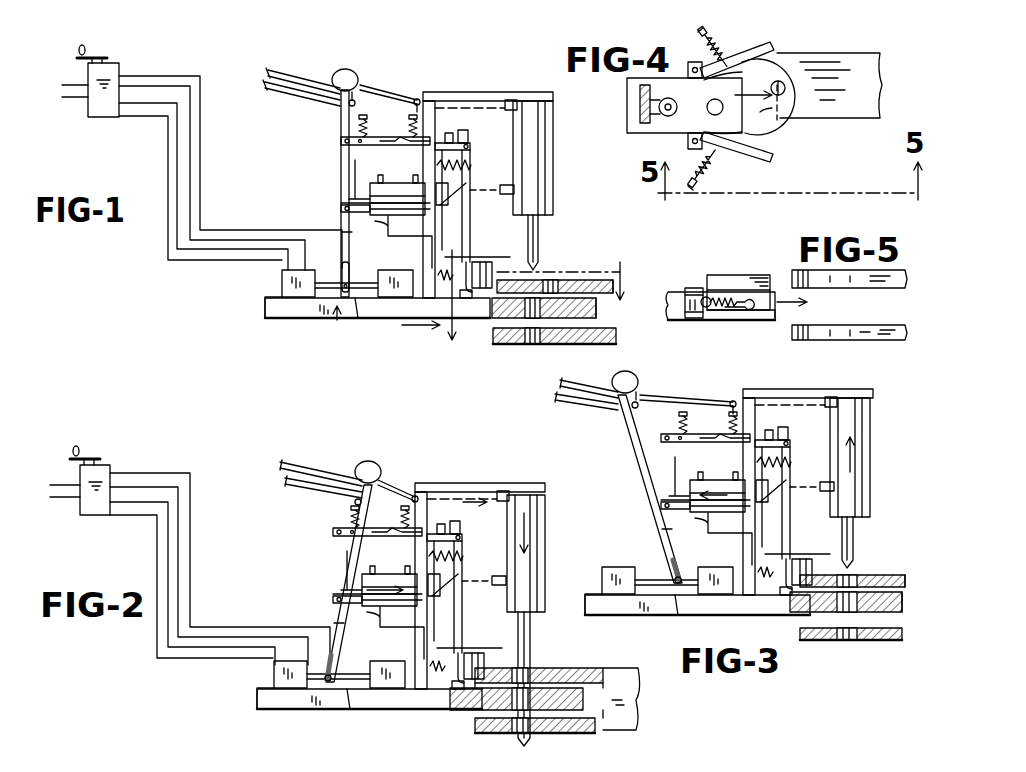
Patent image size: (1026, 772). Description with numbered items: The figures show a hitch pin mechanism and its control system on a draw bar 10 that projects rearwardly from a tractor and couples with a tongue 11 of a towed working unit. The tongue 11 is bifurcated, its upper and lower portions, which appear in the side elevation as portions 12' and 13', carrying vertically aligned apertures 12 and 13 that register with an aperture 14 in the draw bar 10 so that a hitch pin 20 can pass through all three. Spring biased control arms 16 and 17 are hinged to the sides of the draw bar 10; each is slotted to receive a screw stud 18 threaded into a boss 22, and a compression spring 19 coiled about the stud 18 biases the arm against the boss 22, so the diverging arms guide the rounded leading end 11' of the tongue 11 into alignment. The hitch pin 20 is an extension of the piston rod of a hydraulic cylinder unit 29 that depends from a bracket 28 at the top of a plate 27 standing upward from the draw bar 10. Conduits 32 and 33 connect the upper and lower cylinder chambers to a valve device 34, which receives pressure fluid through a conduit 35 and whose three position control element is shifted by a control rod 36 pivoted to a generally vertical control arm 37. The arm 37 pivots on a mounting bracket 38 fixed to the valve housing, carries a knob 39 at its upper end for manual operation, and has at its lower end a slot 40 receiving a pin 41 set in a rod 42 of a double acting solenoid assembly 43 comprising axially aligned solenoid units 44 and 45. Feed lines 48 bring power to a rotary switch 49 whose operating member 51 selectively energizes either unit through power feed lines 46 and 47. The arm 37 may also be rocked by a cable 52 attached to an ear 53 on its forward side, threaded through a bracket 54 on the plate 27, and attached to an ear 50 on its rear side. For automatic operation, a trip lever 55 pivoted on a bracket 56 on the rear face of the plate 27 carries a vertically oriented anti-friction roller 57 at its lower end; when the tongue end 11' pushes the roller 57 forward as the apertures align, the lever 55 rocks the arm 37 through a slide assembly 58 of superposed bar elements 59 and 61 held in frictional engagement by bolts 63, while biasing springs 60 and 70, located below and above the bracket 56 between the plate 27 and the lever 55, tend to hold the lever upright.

In FIG. 1, the draw bar 10 is at (340, 312).
In FIG. 2, the draw bar 10 is at (369, 715).
In FIG. 3, the draw bar 10 is at (697, 621).
In FIG. 4, the draw bar 10 is at (620, 114).
In FIG. 5, the draw bar 10 is at (676, 285).
In FIG. 1, the tongue 11 is at (584, 322).
In FIG. 2, the tongue 11 is at (643, 699).
In FIG. 3, the tongue 11 is at (906, 608).
In FIG. 4, the tongue 11 is at (829, 70).
In FIG. 5, the tongue 11 is at (897, 311).
In FIG. 2, the rounded leading end surface 11' is at (497, 665).
In FIG. 4, the rounded leading end surface 11' is at (749, 109).
In FIG. 5, the rounded leading end surface 11' is at (828, 289).
In FIG. 1, the aperture 12 is at (558, 268).
In FIG. 2, the aperture 12 is at (539, 658).
In FIG. 3, the aperture 12 is at (852, 569).
In FIG. 4, the aperture 12 is at (797, 62).
In FIG. 5, the upper strip portion 12' is at (858, 293).
In FIG. 1, the aperture 13 is at (544, 332).
In FIG. 2, the aperture 13 is at (516, 727).
In FIG. 3, the aperture 13 is at (846, 635).
In FIG. 5, the middle strip portion 13' is at (836, 347).
In FIG. 1, the aperture 14 is at (523, 330).
In FIG. 2, the aperture 14 is at (555, 683).
In FIG. 3, the aperture 14 is at (832, 613).
In FIG. 4, the aperture 14 is at (712, 99).
In FIG. 4, the control arm 16 is at (760, 42).
In FIG. 4, the control arm 17 is at (770, 162).
In FIG. 5, the control arm 17 is at (758, 275).
In FIG. 4, the screw stud 18 is at (698, 32).
In FIG. 5, the screw stud 18 is at (698, 287).
In FIG. 4, the compression spring 19 is at (718, 40).
In FIG. 5, the compression spring 19 is at (718, 295).
In FIG. 1, the hitch pin 20 is at (540, 230).
In FIG. 2, the hitch pin 20 is at (528, 745).
In FIG. 3, the hitch pin 20 is at (855, 540).
In FIG. 4, the boss 22 is at (755, 136).
In FIG. 1, the plate 27 is at (431, 300).
In FIG. 2, the plate 27 is at (421, 617).
In FIG. 3, the plate 27 is at (749, 523).
In FIG. 4, the plate 27 is at (640, 100).
In FIG. 1, the bracket 28 is at (476, 92).
In FIG. 2, the bracket 28 is at (480, 463).
In FIG. 3, the bracket 28 is at (808, 369).
In FIG. 1, the hydraulic cylinder unit 29 is at (545, 150).
In FIG. 2, the hydraulic cylinder unit 29 is at (545, 505).
In FIG. 3, the hydraulic cylinder unit 29 is at (870, 428).
In FIG. 1, the conduit 32 is at (512, 100).
In FIG. 2, the conduit 32 is at (476, 473).
In FIG. 3, the conduit 32 is at (804, 379).
In FIG. 1, the conduit 33 is at (505, 172).
In FIG. 2, the conduit 33 is at (484, 569).
In FIG. 3, the conduit 33 is at (812, 475).
In FIG. 1, the valve device 34 is at (397, 190).
In FIG. 2, the valve device 34 is at (389, 577).
In FIG. 3, the valve device 34 is at (717, 483).
In FIG. 1, the conduit 35 is at (386, 238).
In FIG. 2, the conduit 35 is at (388, 633).
In FIG. 3, the conduit 35 is at (716, 539).
In FIG. 1, the control rod 36 is at (360, 195).
In FIG. 2, the control rod 36 is at (353, 569).
In FIG. 3, the control rod 36 is at (681, 475).
In FIG. 1, the control arm 37 is at (341, 168).
In FIG. 2, the control arm 37 is at (348, 555).
In FIG. 3, the control arm 37 is at (648, 488).
In FIG. 1, the mounting bracket 38 is at (341, 209).
In FIG. 2, the mounting bracket 38 is at (358, 604).
In FIG. 3, the mounting bracket 38 is at (686, 510).
In FIG. 1, the knob 39 is at (340, 70).
In FIG. 2, the knob 39 is at (363, 464).
In FIG. 3, the knob 39 is at (645, 362).
In FIG. 1, the slot 40 is at (349, 270).
In FIG. 2, the slot 40 is at (325, 660).
In FIG. 3, the slot 40 is at (670, 572).
In FIG. 1, the pin 41 is at (357, 318).
In FIG. 2, the pin 41 is at (356, 713).
In FIG. 3, the pin 41 is at (684, 619).
In FIG. 1, the rod 42 is at (325, 280).
In FIG. 2, the rod 42 is at (335, 651).
In FIG. 3, the rod 42 is at (663, 557).
In FIG. 1, the double acting solenoid assembly 43 is at (281, 284).
In FIG. 2, the double acting solenoid assembly 43 is at (264, 674).
In FIG. 3, the double acting solenoid assembly 43 is at (592, 580).
In FIG. 1, the solenoid unit 44 is at (293, 300).
In FIG. 2, the solenoid unit 44 is at (273, 712).
In FIG. 3, the solenoid unit 44 is at (601, 618).
In FIG. 1, the solenoid unit 45 is at (393, 298).
In FIG. 2, the solenoid unit 45 is at (387, 699).
In FIG. 3, the solenoid unit 45 is at (715, 605).
In FIG. 1, the power feed line 46 is at (146, 118).
In FIG. 2, the power feed line 46 is at (112, 510).
In FIG. 1, the power feed line 47 is at (156, 76).
In FIG. 2, the power feed line 47 is at (164, 474).
In FIG. 1, the feed lines 48 is at (74, 100).
In FIG. 2, the feed lines 48 is at (64, 500).
In FIG. 1, the rotary switch 49 is at (100, 118).
In FIG. 2, the rotary switch 49 is at (96, 515).
In FIG. 1, the ear 50 is at (358, 94).
In FIG. 3, the ear 50 is at (640, 398).
In FIG. 1, the switch operating member 51 is at (98, 56).
In FIG. 2, the switch operating member 51 is at (87, 456).
In FIG. 1, the cable 52 is at (280, 72).
In FIG. 2, the cable 52 is at (284, 481).
In FIG. 3, the cable 52 is at (578, 407).
In FIG. 1, the ear 53 is at (340, 105).
In FIG. 2, the ear 53 is at (352, 505).
In FIG. 3, the ear 53 is at (628, 415).
In FIG. 1, the bracket 54 is at (422, 95).
In FIG. 3, the bracket 54 is at (737, 398).
In FIG. 1, the trip lever 55 is at (470, 218).
In FIG. 2, the trip lever 55 is at (474, 597).
In FIG. 3, the trip lever 55 is at (802, 503).
In FIG. 1, the bracket 56 is at (462, 196).
In FIG. 2, the bracket 56 is at (461, 582).
In FIG. 3, the bracket 56 is at (789, 488).
In FIG. 1, the anti-friction roller 57 is at (468, 299).
In FIG. 2, the anti-friction roller 57 is at (467, 706).
In FIG. 3, the anti-friction roller 57 is at (795, 612).
In FIG. 4, the anti-friction roller 57 is at (670, 120).
In FIG. 1, the slide assembly 58 is at (391, 117).
In FIG. 2, the slide assembly 58 is at (401, 514).
In FIG. 3, the slide assembly 58 is at (703, 417).
In FIG. 1, the upper bar element 59 is at (452, 133).
In FIG. 2, the upper bar element 59 is at (464, 522).
In FIG. 3, the upper bar element 59 is at (792, 428).
In FIG. 1, the biasing spring 60 is at (468, 262).
In FIG. 2, the biasing spring 60 is at (466, 651).
In FIG. 3, the biasing spring 60 is at (794, 557).
In FIG. 1, the lower bar element 61 is at (345, 147).
In FIG. 2, the lower bar element 61 is at (357, 543).
In FIG. 3, the lower bar element 61 is at (685, 449).
In FIG. 1, the bolt 63 is at (358, 124).
In FIG. 2, the bolt 63 is at (365, 516).
In FIG. 3, the bolt 63 is at (693, 422).
In FIG. 1, the biasing spring 70 is at (460, 163).
In FIG. 2, the biasing spring 70 is at (461, 543).
In FIG. 3, the biasing spring 70 is at (789, 449).